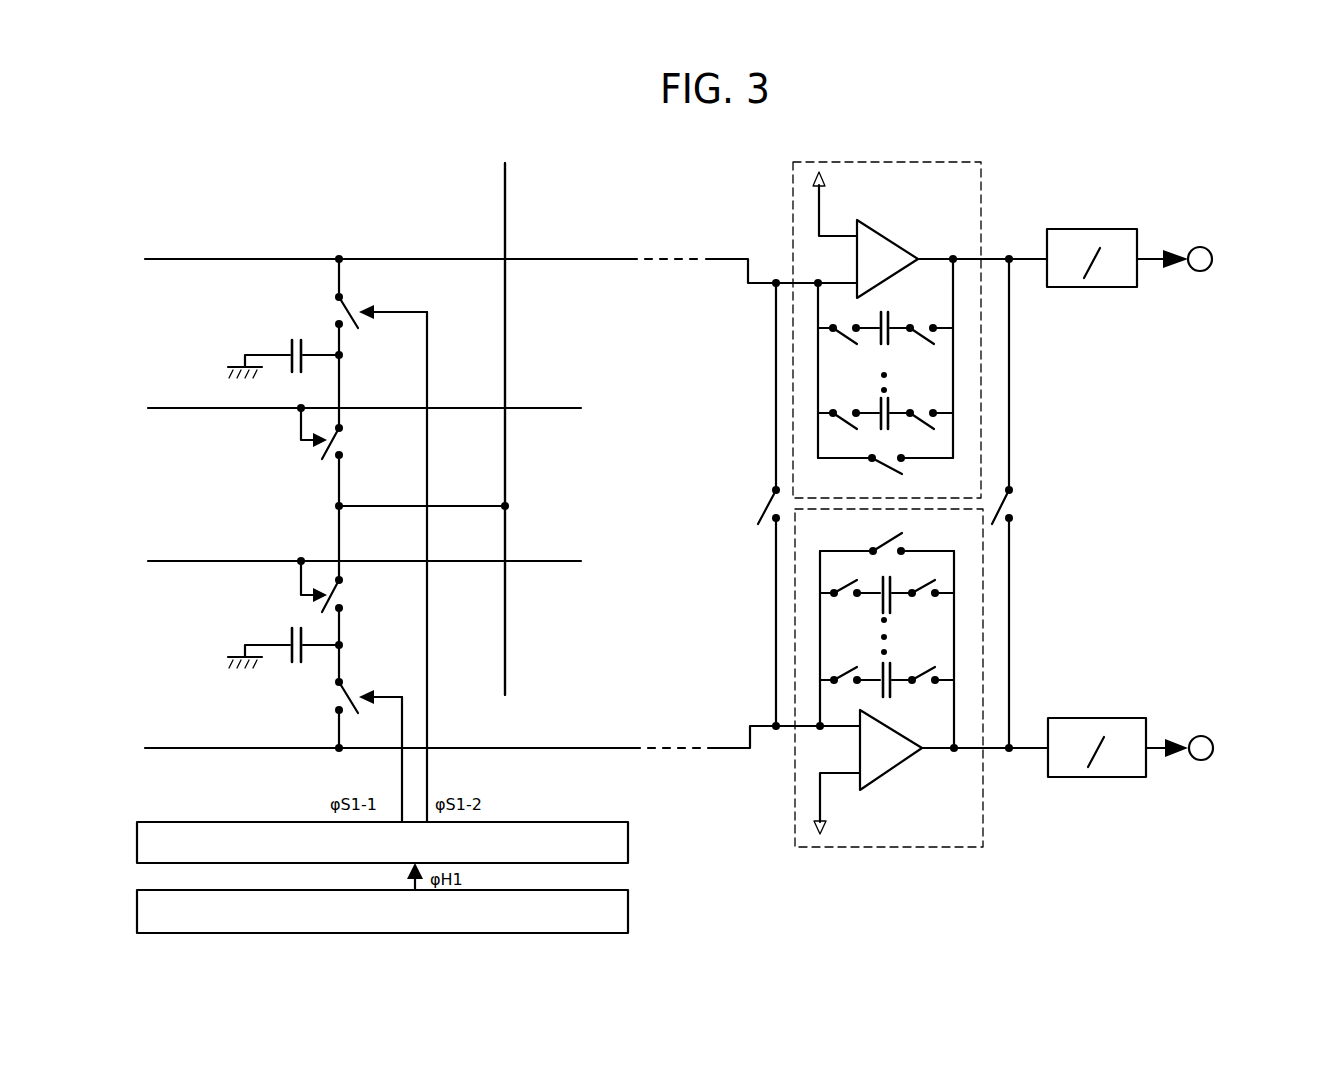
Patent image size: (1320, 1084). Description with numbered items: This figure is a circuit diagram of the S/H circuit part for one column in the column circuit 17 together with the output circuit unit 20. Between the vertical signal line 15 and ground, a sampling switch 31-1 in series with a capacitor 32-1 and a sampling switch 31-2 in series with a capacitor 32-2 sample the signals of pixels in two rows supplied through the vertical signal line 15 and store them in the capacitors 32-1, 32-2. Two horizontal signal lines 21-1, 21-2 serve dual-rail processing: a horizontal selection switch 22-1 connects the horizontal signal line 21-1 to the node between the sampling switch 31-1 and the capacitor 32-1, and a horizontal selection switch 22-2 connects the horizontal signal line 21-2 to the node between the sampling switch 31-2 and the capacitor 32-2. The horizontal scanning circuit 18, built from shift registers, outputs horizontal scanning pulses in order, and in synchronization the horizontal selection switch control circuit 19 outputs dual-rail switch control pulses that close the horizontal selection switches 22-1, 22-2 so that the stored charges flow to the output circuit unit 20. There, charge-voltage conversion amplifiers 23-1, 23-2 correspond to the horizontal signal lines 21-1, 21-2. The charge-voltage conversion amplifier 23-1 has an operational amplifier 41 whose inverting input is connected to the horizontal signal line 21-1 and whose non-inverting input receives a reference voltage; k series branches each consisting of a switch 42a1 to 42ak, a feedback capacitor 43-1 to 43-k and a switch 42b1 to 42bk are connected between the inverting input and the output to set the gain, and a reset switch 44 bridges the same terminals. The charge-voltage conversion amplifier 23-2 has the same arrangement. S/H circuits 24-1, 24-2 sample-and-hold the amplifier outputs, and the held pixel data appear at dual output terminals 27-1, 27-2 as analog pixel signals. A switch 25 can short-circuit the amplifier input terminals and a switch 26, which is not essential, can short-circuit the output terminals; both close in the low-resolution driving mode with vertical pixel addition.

The vertical signal line 15 is at (508, 335).
The column circuit 17 is at (583, 208).
The horizontal scanning circuit 18 is at (634, 912).
The horizontal selection switch control circuit 19 is at (634, 845).
The output circuit unit 20 is at (1040, 208).
The horizontal signal line 21-1 is at (164, 257).
The horizontal signal line 21-2 is at (152, 751).
The horizontal selection switch 22-1 is at (352, 307).
The horizontal selection switch 22-2 is at (352, 694).
The charge-voltage conversion amplifier 23-1 is at (911, 307).
The charge-voltage conversion amplifier 23-2 is at (915, 848).
The S/H circuit 24-1 is at (1090, 229).
The S/H circuit 24-2 is at (1092, 717).
The switch 25 is at (760, 507).
The switch 26 is at (1015, 507).
The output terminal 27-1 is at (1197, 246).
The output terminal 27-2 is at (1199, 735).
The sampling switch 31-1 is at (343, 440).
The sampling switch 31-2 is at (343, 593).
The capacitor 32-1 is at (297, 337).
The capacitor 32-2 is at (297, 668).
The operational amplifier 41 is at (890, 236).
The switch 42a1 is at (842, 323).
The switch 42b1 is at (925, 323).
The switch 42ak is at (842, 411).
The switch 42bk is at (925, 411).
The feedback capacitor 43-1 is at (883, 341).
The feedback capacitor 43-k is at (883, 426).
The reset switch 44 is at (885, 476).